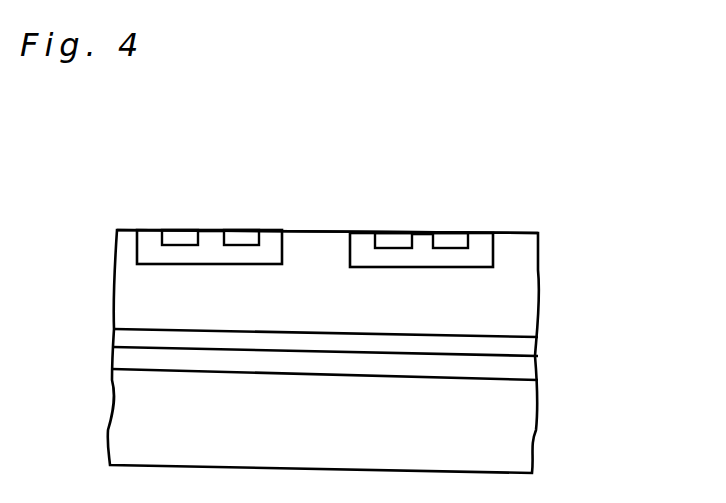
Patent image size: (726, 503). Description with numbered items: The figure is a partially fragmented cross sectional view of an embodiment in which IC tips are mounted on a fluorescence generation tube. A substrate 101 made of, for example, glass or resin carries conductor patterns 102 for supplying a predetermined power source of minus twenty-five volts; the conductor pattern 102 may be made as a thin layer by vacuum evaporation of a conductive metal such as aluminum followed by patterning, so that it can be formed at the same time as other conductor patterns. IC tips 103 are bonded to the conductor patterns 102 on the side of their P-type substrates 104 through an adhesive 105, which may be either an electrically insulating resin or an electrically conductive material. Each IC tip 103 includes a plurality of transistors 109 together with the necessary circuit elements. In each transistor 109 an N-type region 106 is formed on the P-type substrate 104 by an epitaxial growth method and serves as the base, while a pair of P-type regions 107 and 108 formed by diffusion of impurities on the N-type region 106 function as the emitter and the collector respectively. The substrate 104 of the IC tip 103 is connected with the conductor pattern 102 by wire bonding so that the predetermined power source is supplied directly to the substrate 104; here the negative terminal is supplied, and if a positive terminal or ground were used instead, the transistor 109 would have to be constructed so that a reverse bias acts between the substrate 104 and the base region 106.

The substrate 101 is at (512, 420).
The conductor pattern 102 is at (512, 370).
The IC tip 103 is at (538, 252).
The P-type substrate 104 is at (512, 297).
The adhesive 105 is at (512, 343).
The N-type region 106 is at (208, 231).
The P-type region 107 is at (165, 231).
The P-type region 108 is at (251, 231).
The transistor 109 is at (262, 231).